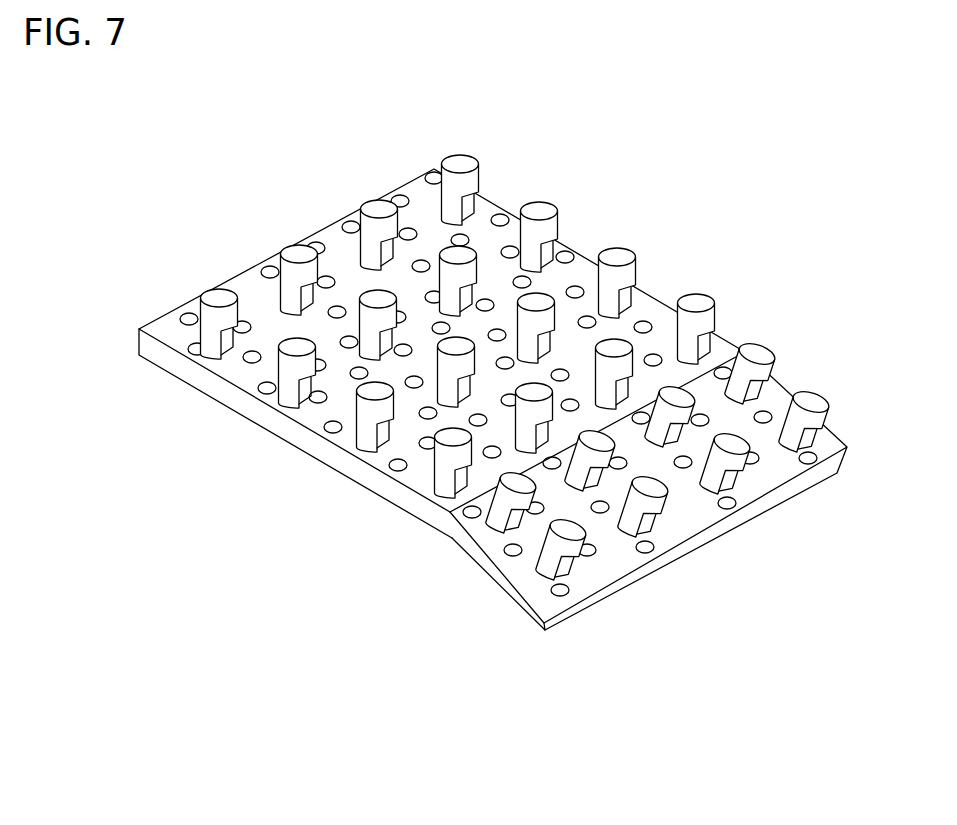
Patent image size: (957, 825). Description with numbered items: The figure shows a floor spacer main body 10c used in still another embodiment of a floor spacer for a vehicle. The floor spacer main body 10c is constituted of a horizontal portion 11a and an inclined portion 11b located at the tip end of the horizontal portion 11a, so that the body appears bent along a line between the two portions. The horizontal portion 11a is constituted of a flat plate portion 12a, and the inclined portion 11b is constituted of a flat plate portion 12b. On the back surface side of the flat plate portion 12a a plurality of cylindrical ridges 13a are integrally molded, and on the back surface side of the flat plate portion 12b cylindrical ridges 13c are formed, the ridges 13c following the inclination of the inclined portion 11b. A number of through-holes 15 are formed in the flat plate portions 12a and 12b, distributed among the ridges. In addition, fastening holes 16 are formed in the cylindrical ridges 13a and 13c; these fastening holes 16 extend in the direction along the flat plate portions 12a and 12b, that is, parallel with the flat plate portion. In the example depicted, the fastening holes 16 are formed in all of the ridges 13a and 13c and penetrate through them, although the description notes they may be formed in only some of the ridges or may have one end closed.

The floor spacer main body 10c is at (470, 432).
The horizontal portion 11a is at (181, 400).
The inclined portion 11b is at (465, 578).
The flat plate portion 12a is at (262, 418).
The flat plate portion 12b is at (520, 597).
The ridges 13a is at (620, 250).
The ridges 13c is at (742, 449).
The through-holes 15 is at (421, 258).
The fastening holes 16 is at (637, 296).